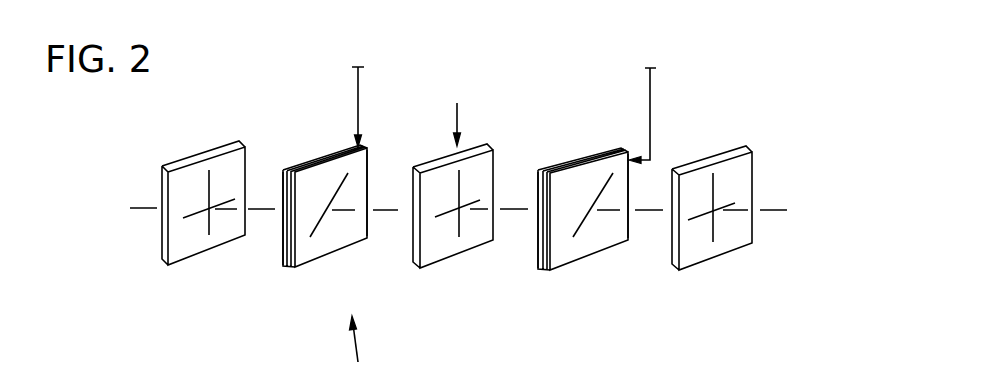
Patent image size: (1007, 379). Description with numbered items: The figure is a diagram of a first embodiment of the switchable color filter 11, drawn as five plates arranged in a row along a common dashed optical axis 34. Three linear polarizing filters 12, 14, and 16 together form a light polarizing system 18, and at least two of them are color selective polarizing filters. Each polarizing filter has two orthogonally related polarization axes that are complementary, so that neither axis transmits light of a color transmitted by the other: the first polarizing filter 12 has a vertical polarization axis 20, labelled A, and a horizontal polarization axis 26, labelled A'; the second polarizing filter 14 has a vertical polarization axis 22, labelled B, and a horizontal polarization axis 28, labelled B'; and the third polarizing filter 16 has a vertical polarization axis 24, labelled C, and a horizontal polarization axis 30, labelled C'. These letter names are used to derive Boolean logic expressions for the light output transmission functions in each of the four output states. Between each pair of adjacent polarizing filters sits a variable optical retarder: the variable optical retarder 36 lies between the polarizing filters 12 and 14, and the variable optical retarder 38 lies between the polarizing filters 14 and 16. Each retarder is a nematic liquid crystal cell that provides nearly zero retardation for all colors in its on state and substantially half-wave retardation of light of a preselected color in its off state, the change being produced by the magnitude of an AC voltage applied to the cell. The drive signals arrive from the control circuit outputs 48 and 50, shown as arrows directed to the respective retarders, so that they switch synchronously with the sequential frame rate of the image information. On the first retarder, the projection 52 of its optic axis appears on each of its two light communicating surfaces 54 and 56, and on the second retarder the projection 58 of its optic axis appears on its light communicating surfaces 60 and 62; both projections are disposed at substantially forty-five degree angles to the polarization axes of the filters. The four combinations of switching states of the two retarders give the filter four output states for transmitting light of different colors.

The switchable color filter 11 is at (361, 347).
The polarizing filter 12 is at (197, 257).
The polarizing filter 14 is at (443, 260).
The polarizing filter 16 is at (705, 262).
The light polarizing system 18 is at (459, 114).
The vertical polarization axis 20 is at (208, 185).
The vertical polarization axis 22 is at (458, 181).
The vertical polarization axis 24 is at (712, 191).
The horizontal polarization axis 26 is at (226, 202).
The horizontal polarization axis 28 is at (472, 202).
The horizontal polarization axis 30 is at (735, 203).
The optical axis 34 is at (772, 212).
The variable optical retarder 36 is at (317, 260).
The variable optical retarder 38 is at (570, 262).
The output 48 is at (358, 97).
The output 50 is at (650, 98).
The projection of the optic axis 52 is at (320, 228).
The light communicating surface 54 is at (283, 250).
The light communicating surface 56 is at (363, 172).
The projection of the optic axis 58 is at (578, 233).
The light communicating surface 60 is at (538, 250).
The light communicating surface 62 is at (623, 200).